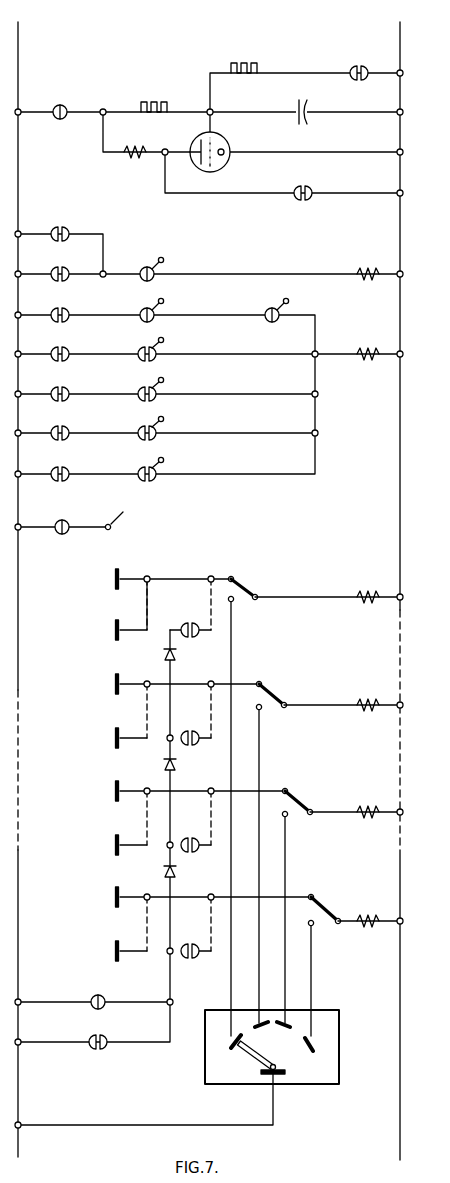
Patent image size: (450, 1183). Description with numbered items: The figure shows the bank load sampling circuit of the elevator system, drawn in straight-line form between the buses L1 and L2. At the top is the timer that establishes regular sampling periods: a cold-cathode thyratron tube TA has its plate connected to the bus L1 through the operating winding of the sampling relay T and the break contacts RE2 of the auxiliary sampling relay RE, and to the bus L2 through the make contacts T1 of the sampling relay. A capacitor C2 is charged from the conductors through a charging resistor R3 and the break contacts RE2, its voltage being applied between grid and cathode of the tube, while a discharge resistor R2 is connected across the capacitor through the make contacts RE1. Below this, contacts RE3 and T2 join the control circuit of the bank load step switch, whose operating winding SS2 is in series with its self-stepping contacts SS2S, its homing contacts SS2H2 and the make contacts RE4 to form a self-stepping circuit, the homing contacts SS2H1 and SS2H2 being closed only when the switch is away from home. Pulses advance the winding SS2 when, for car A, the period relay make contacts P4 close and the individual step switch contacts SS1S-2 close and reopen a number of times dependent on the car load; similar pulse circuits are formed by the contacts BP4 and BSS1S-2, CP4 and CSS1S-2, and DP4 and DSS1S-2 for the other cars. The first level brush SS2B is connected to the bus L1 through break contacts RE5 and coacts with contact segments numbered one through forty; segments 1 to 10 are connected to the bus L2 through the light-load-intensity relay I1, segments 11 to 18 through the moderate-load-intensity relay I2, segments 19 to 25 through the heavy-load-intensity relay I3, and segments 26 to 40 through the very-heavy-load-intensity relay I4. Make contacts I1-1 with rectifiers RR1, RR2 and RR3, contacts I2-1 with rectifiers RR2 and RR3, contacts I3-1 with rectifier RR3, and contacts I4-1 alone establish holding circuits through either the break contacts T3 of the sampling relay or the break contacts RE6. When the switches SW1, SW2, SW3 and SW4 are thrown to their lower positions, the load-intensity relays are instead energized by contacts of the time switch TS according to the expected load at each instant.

The bus L1 is at (19, 32).
The bus L2 is at (399, 33).
The discharge resistor R2 is at (245, 60).
The make contacts of auxiliary sampling relay RE1 is at (354, 63).
The break contacts of auxiliary sampling relay RE2 is at (72, 93).
The charging resistor R3 is at (155, 99).
The capacitor C2 is at (307, 104).
The sampling relay T is at (140, 141).
The thyratron tube TA is at (226, 151).
The make contacts of sampling relay T1 is at (311, 191).
The contacts of auxiliary sampling relay RE3 is at (78, 218).
The contacts of sampling relay T2 is at (72, 255).
The homing contacts SS2H1 is at (148, 252).
The auxiliary sampling relay RE is at (368, 264).
The make contacts of auxiliary sampling relay RE4 is at (77, 303).
The homing contacts SS2H2 is at (147, 305).
The self-stepping contacts SS2S is at (268, 307).
The make contacts of period relay P4 is at (72, 347).
The contacts of individual load step switch SS1S-2 is at (154, 345).
The bank load step switch operating winding SS2 is at (390, 345).
The make contacts of period relay of car B BP4 is at (78, 376).
The contacts of individual load step switch of car B BSS1S-2 is at (152, 385).
The make contacts of period relay of car C CP4 is at (78, 416).
The contacts of individual load step switch of car C CSS1S-2 is at (152, 427).
The make contacts of period relay of car D DP4 is at (78, 457).
The contacts of individual load step switch of car D DSS1S-2 is at (152, 468).
The break contacts of auxiliary sampling relay RE5 is at (61, 521).
The first level brush SS2B is at (140, 517).
The contact segment 1 is at (126, 573).
The contact segment 10 is at (129, 625).
The contact segment 11 is at (129, 679).
The contact segment 18 is at (129, 733).
The contact segment 19 is at (129, 786).
The contact segment 25 is at (129, 839).
The contact segment 26 is at (129, 892).
The contact segment 40 is at (129, 945).
The switch SW1 is at (242, 595).
The switch SW2 is at (271, 703).
The switch SW3 is at (293, 816).
The switch SW4 is at (313, 929).
The light-load-intensity relay I1 is at (379, 587).
The moderate-load-intensity relay I2 is at (374, 693).
The heavy-load-intensity relay I3 is at (377, 802).
The very-heavy-load-intensity relay I4 is at (380, 911).
The make contacts of light-load-intensity relay I1-1 is at (195, 623).
The make contacts of moderate-load-intensity relay I2-1 is at (188, 746).
The make contacts of heavy-load-intensity relay I3-1 is at (188, 853).
The make contacts of very-heavy-load-intensity relay I4-1 is at (188, 959).
The rectifier RR1 is at (163, 656).
The rectifier RR2 is at (164, 766).
The rectifier RR3 is at (164, 872).
The break contacts of sampling relay T3 is at (91, 998).
The break contacts of auxiliary sampling relay RE6 is at (99, 1036).
The time switch TS is at (205, 1065).